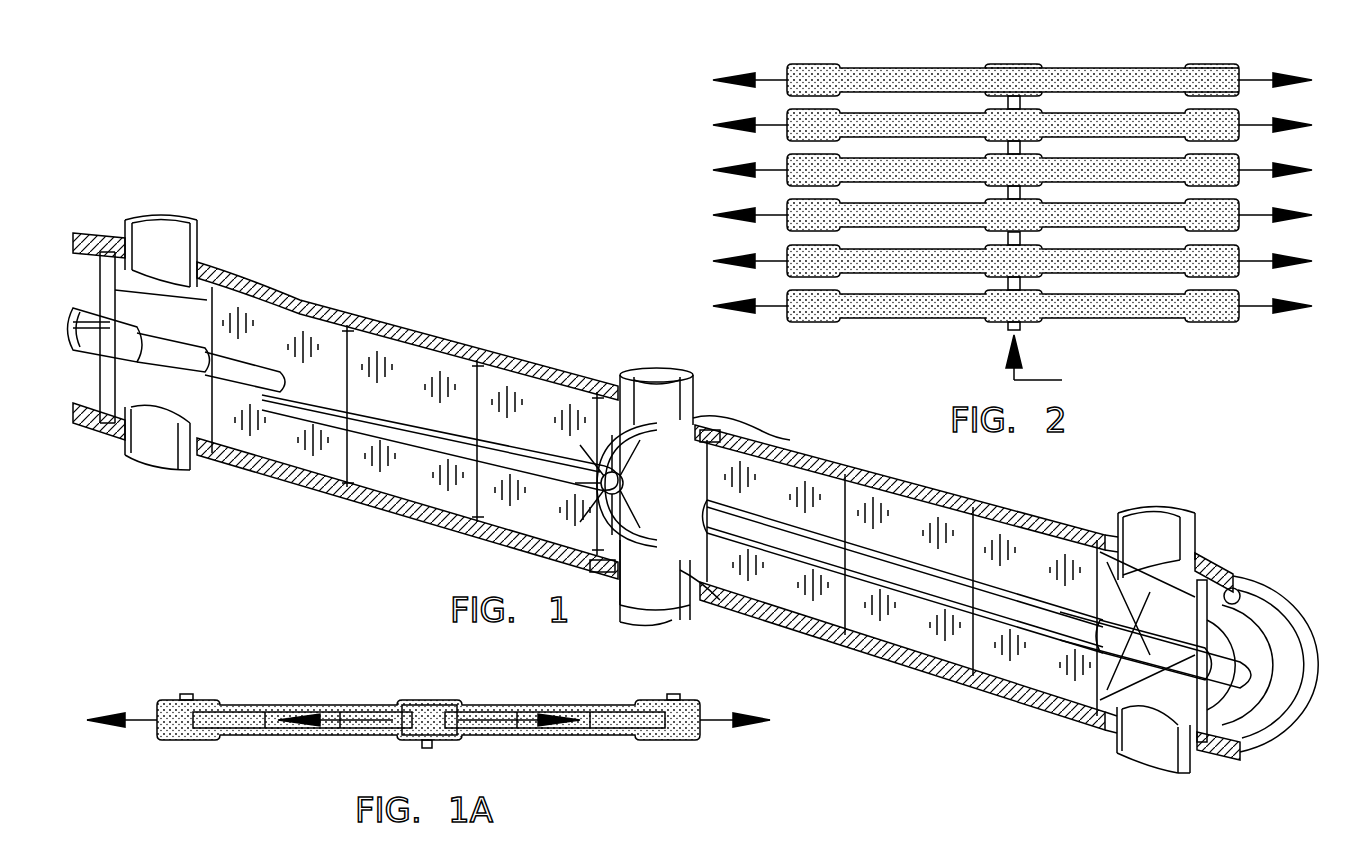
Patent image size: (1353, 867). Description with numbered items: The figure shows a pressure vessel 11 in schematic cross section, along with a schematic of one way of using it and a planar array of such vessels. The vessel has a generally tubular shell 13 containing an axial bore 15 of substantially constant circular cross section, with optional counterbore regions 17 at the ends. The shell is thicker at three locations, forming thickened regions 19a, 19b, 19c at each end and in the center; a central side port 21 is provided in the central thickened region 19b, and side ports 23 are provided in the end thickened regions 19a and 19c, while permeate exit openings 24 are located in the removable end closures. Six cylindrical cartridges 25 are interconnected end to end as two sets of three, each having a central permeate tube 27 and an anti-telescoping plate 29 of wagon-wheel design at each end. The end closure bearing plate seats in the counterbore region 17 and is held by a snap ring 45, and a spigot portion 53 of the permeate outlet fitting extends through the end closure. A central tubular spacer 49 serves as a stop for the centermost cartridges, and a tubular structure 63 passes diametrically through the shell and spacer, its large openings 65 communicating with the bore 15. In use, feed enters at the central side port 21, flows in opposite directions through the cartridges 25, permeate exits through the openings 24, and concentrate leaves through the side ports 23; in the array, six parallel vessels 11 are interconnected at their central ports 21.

In FIG. 1, the pressure vessel 11 is at (470, 310).
In FIG. 1A, the pressure vessel 11 is at (360, 657).
In FIG. 2, the pressure vessel 11 is at (1166, 342).
In FIG. 1, the tubular shell 13 is at (395, 333).
In FIG. 1A, the tubular shell 13 is at (298, 730).
In FIG. 2, the tubular shell 13 is at (900, 270).
In FIG. 1, the axial bore 15 is at (882, 655).
In FIG. 1, the counterbore region 17 is at (1240, 580).
In FIG. 1, the end thickened region 19a is at (230, 268).
In FIG. 1A, the end thickened region 19a is at (175, 742).
In FIG. 2, the end thickened region 19a is at (812, 63).
In FIG. 1, the central thickened region 19b is at (772, 442).
In FIG. 1A, the central thickened region 19b is at (440, 700).
In FIG. 2, the central thickened region 19b is at (1002, 63).
In FIG. 1, the end thickened region 19c is at (1105, 522).
In FIG. 1A, the end thickened region 19c is at (665, 742).
In FIG. 2, the end thickened region 19c is at (1216, 63).
In FIG. 1, the central side port 21 is at (645, 368).
In FIG. 1A, the central side port 21 is at (430, 748).
In FIG. 2, the central side port 21 is at (1020, 155).
In FIG. 1, the side port 23 is at (160, 220).
In FIG. 1A, the side port 23 is at (188, 694).
In FIG. 1, the permeate exit opening 24 is at (120, 318).
In FIG. 1, the cylindrical cartridge 25 is at (284, 455).
In FIG. 1A, the cylindrical cartridge 25 is at (232, 724).
In FIG. 1, the central permeate tube 27 is at (285, 378).
In FIG. 1, the anti-telescoping plate 29 is at (640, 497).
In FIG. 1, the snap ring 45 is at (95, 400).
In FIG. 1, the central tubular spacer 49 is at (612, 548).
In FIG. 1, the spigot portion 53 is at (95, 345).
In FIG. 1, the tubular structure 63 is at (672, 395).
In FIG. 1, the large opening 65 is at (680, 560).